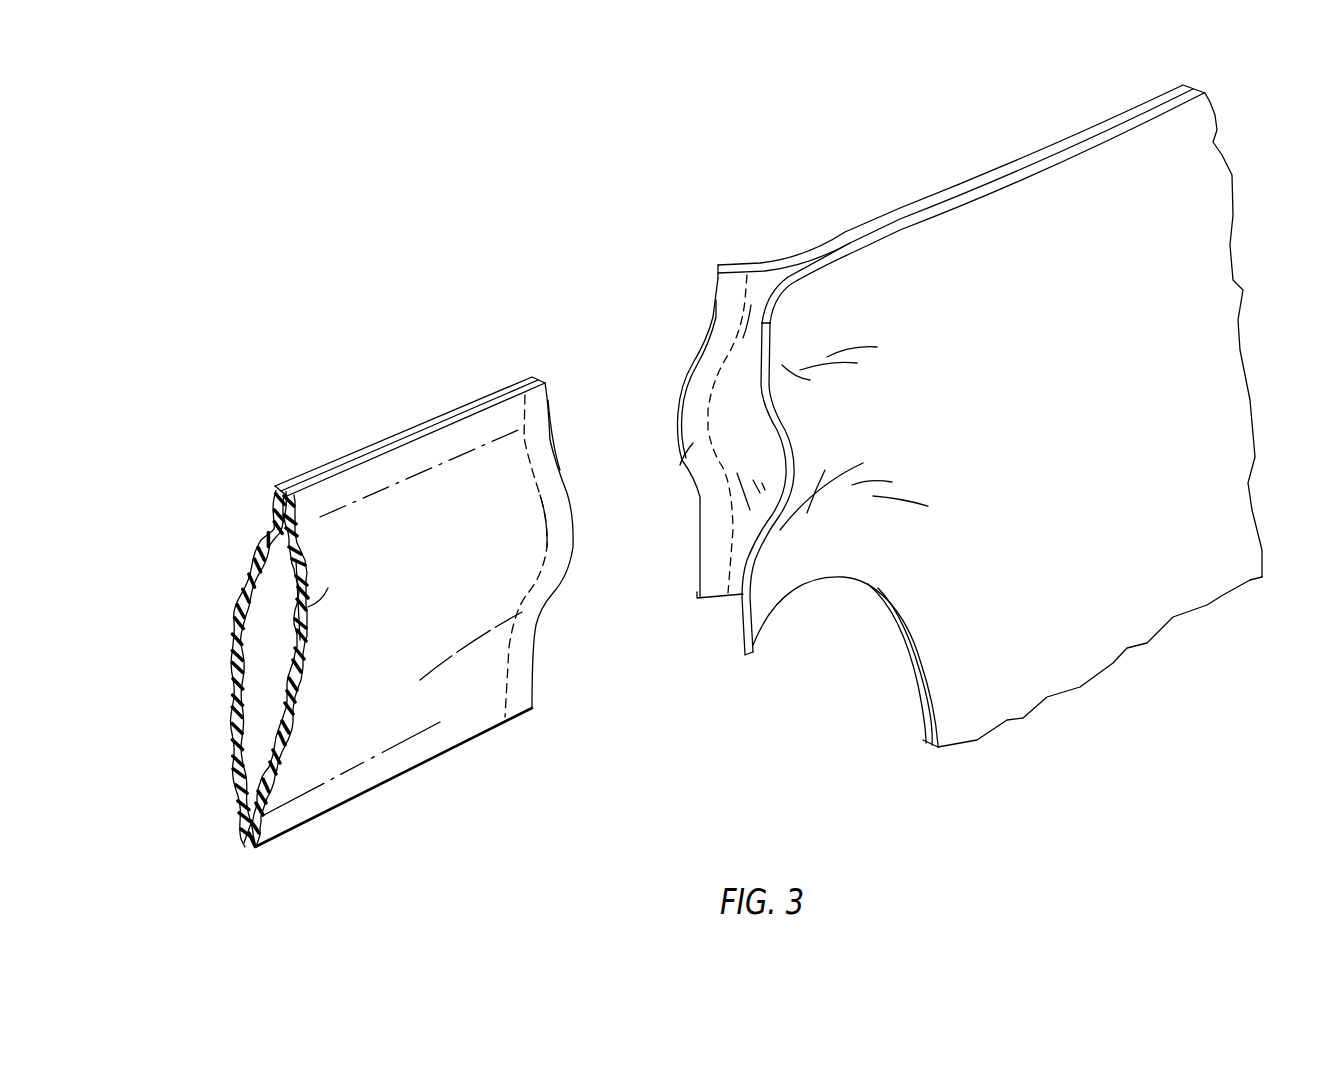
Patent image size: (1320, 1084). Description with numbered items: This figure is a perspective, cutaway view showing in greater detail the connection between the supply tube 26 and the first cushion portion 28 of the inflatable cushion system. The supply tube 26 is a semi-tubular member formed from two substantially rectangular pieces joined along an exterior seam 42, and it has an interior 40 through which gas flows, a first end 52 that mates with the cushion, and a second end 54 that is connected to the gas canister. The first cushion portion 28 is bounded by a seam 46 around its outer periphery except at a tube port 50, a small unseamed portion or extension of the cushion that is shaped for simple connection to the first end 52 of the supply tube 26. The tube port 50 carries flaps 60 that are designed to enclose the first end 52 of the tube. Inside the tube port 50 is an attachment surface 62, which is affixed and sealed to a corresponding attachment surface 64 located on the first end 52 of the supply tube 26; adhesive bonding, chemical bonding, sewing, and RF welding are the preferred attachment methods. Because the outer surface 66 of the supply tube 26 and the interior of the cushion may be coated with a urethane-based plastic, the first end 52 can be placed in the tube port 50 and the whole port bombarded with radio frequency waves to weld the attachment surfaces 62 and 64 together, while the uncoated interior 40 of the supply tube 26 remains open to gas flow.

The supply tube 26 is at (403, 405).
The first cushion portion 28 is at (877, 200).
The interior 40 is at (253, 690).
The exterior seam 42 is at (313, 470).
The seam 46 is at (1080, 138).
The tube port 50 is at (753, 460).
The first end 52 is at (530, 566).
The second end 54 is at (302, 607).
The flaps 60 is at (760, 373).
The attachment surface 62 is at (677, 458).
The attachment surface 64 is at (540, 450).
The outer surface 66 is at (400, 752).